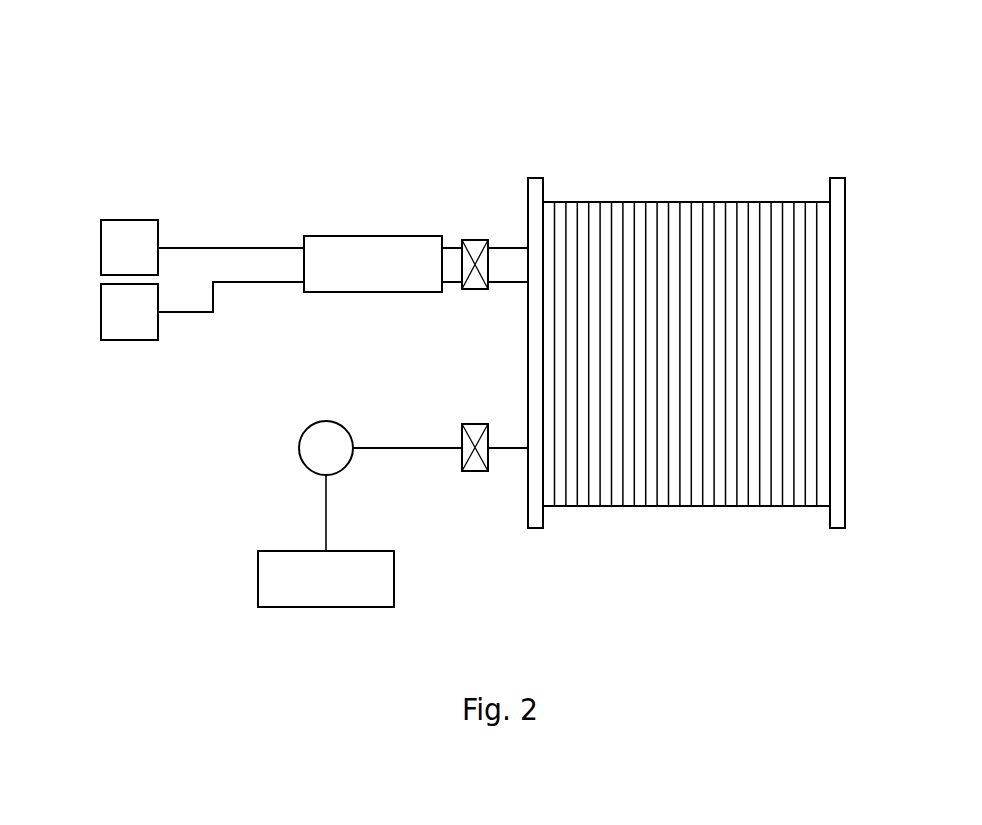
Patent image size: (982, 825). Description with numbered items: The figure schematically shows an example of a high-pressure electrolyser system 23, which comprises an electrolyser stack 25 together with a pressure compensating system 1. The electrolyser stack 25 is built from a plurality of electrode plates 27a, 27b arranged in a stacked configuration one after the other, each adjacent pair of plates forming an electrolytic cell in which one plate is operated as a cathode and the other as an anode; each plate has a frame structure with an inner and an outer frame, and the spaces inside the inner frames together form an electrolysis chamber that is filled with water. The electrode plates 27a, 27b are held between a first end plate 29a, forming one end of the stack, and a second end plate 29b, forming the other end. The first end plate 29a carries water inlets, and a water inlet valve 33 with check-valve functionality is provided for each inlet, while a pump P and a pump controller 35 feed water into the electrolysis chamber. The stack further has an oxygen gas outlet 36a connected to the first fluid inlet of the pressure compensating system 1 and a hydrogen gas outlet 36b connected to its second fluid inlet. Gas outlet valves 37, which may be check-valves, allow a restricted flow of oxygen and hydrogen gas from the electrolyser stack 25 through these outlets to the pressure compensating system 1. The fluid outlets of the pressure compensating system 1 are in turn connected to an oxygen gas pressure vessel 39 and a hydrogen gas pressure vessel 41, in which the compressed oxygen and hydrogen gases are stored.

The pressure compensating system 1 is at (380, 281).
The high-pressure electrolyser system 23 is at (398, 186).
The electrolyser stack 25 is at (690, 358).
The electrode plate 27a is at (548, 506).
The electrode plate 27b is at (565, 506).
The first end plate 29a is at (532, 178).
The second end plate 29b is at (837, 178).
The water inlet valve 33 is at (482, 471).
The pump controller 35 is at (342, 594).
The oxygen gas outlet 36a is at (512, 248).
The hydrogen gas outlet 36b is at (515, 282).
The gas outlet valve 37 is at (480, 289).
The oxygen gas pressure vessel 39 is at (122, 220).
The hydrogen gas pressure vessel 41 is at (122, 340).